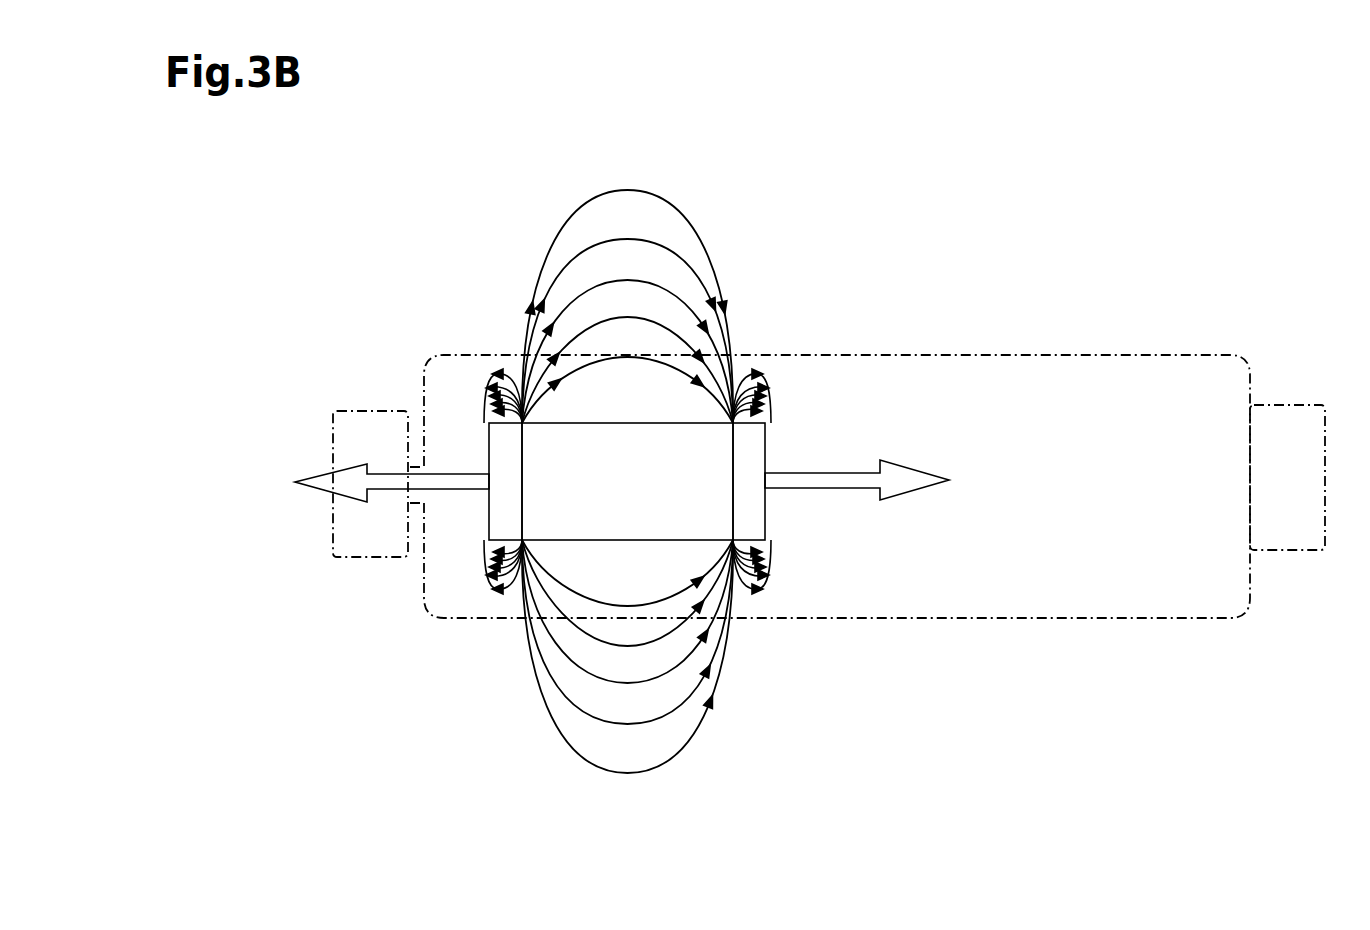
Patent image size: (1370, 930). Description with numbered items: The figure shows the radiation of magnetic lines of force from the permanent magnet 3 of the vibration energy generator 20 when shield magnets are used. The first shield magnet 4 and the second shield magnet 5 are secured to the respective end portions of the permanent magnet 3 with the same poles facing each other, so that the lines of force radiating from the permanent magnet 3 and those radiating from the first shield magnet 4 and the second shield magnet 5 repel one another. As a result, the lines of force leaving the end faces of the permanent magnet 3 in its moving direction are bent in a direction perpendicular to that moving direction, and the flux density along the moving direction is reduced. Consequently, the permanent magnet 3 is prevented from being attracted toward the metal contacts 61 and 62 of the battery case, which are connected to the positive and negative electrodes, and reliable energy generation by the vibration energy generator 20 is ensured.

The permanent magnet 3 is at (620, 423).
The first shield magnet 4 is at (760, 442).
The second shield magnet 5 is at (494, 440).
The vibration energy generator 20 is at (958, 318).
The metal contact 61 is at (367, 411).
The metal contact 62 is at (1287, 405).